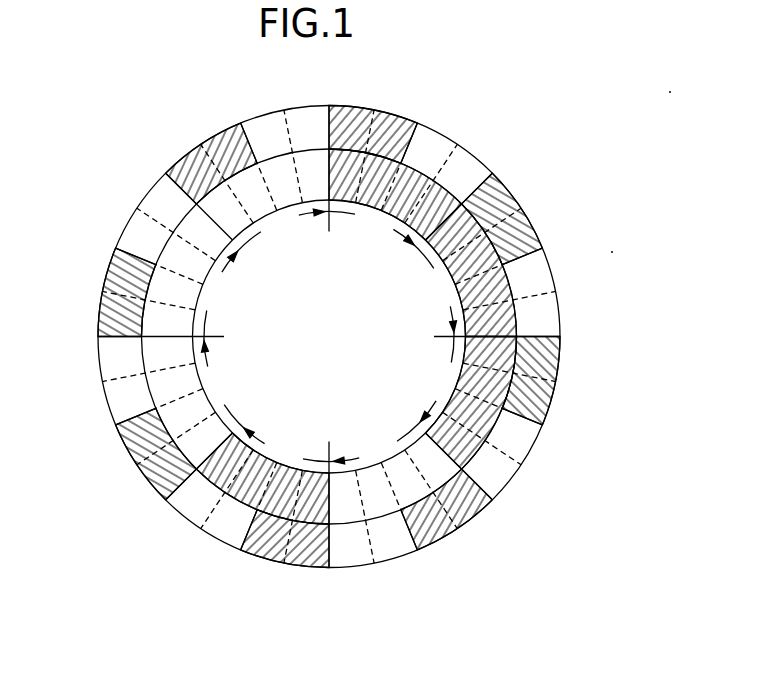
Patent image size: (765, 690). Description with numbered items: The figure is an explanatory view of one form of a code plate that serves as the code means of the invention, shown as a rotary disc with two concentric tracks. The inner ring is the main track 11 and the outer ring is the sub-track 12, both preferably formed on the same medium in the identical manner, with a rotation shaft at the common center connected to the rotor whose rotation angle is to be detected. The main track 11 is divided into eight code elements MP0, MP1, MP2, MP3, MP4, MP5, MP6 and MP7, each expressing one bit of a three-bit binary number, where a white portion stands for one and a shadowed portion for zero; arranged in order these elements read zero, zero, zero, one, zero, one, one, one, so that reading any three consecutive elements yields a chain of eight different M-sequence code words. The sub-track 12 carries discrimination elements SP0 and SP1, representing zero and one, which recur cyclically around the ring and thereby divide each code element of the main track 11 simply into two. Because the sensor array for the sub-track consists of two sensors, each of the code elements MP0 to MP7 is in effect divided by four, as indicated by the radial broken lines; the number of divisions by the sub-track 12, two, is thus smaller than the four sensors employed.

The sub-track 12 is at (143, 201).
The main track 11 is at (250, 243).
The discrimination element SP0 is at (366, 104).
The discrimination element SP1 is at (266, 112).
The code element MP0 is at (345, 226).
The code element MP1 is at (421, 271).
The code element MP2 is at (434, 350).
The code element MP3 is at (394, 428).
The code element MP4 is at (243, 426).
The code element MP5 is at (232, 407).
The code element MP6 is at (219, 327).
The code element MP7 is at (247, 241).